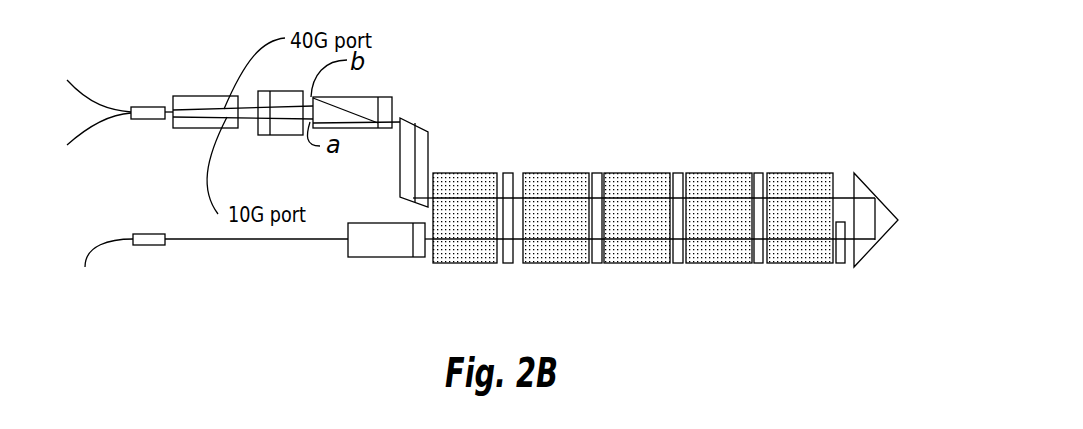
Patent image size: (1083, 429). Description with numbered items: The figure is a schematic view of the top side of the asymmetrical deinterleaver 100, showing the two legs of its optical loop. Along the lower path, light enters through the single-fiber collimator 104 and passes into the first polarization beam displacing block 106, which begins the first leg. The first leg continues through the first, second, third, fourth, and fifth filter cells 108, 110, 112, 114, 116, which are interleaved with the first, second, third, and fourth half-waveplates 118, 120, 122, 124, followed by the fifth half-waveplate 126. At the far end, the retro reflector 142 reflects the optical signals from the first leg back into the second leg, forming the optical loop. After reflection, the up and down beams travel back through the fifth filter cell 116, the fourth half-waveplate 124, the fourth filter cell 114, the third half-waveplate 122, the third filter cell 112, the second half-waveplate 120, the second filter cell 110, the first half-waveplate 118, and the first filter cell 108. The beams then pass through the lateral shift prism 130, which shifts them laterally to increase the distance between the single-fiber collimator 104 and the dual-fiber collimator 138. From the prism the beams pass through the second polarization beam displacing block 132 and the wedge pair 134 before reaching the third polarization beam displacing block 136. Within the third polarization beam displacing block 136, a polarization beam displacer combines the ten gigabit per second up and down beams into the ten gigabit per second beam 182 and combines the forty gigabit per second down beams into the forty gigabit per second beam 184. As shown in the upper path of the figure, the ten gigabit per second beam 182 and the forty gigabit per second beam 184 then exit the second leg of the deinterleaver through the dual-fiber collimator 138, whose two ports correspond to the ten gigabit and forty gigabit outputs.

The asymmetrical deinterleaver 100 is at (827, 75).
The single-fiber collimator 104 is at (148, 245).
The first polarization beam displacing block 106 is at (378, 258).
The first filter cell 108 is at (449, 263).
The second filter cell 110 is at (530, 263).
The third filter cell 112 is at (623, 264).
The fourth filter cell 114 is at (703, 264).
The fifth filter cell 116 is at (787, 263).
The first half-waveplate 118 is at (508, 263).
The second half-waveplate 120 is at (597, 263).
The third half-waveplate 122 is at (677, 263).
The fourth half-waveplate 124 is at (758, 263).
The fifth half-waveplate 126 is at (840, 263).
The lateral shift prism 130 is at (422, 150).
The second polarization beam displacing block 132 is at (368, 140).
The wedge pair 134 is at (283, 142).
The third polarization beam displacing block 136 is at (199, 134).
The dual-fiber collimator 138 is at (148, 120).
The retro reflector 142 is at (885, 225).
The 10 Gb/s beam 182 is at (167, 120).
The 40 Gb/s beam 184 is at (170, 112).